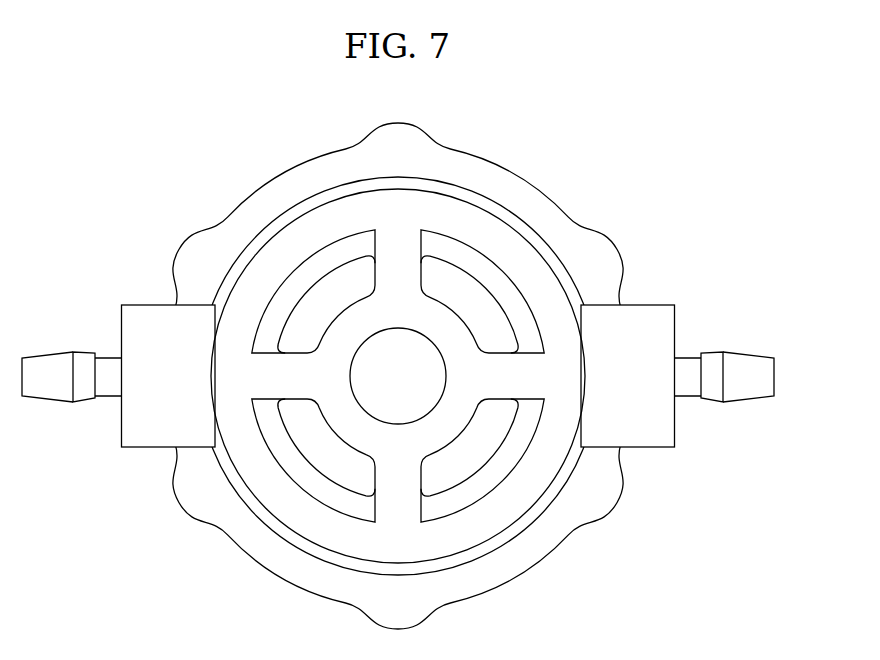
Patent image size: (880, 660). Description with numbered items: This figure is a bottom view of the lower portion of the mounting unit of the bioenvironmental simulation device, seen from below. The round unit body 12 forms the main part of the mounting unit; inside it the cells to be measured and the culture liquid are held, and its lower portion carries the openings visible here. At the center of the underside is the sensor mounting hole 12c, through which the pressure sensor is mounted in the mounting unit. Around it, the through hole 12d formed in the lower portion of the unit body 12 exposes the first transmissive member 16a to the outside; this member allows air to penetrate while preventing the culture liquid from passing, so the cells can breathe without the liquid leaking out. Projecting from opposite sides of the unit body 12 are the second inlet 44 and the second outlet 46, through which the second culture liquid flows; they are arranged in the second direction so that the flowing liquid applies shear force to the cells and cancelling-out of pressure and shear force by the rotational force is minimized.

The unit body 12 is at (522, 198).
The sensor mounting hole 12c is at (373, 414).
The through hole 12d is at (442, 448).
The first transmissive member 16a is at (349, 478).
The second inlet 44 is at (47, 365).
The second outlet 46 is at (745, 365).